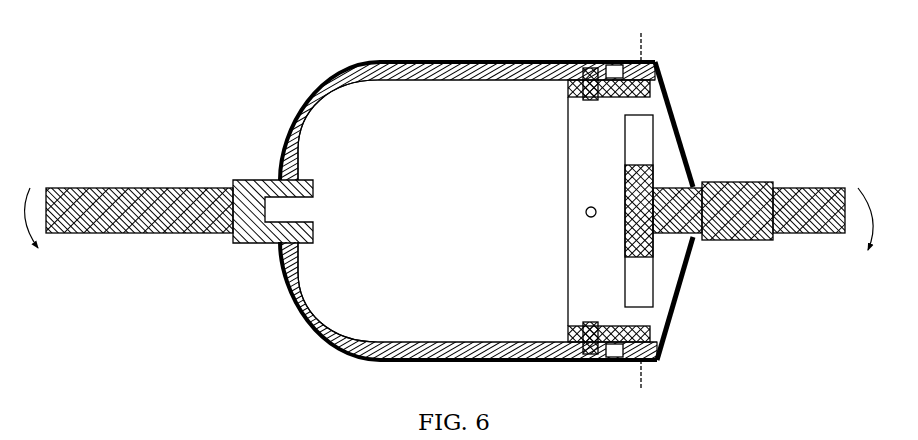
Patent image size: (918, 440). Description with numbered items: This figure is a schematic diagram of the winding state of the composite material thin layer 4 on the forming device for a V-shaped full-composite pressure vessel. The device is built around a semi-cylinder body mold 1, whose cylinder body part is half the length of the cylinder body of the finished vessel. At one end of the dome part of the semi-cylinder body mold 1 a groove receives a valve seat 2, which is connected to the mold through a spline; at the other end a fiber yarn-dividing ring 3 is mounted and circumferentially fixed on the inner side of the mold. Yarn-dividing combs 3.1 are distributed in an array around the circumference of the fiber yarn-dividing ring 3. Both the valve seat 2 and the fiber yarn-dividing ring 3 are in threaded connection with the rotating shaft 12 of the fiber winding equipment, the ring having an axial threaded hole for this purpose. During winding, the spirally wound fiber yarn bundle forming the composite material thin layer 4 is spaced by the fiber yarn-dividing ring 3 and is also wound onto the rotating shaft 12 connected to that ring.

The semi-cylinder body mold 1 is at (301, 298).
The valve seat 2 is at (246, 186).
The fiber yarn-dividing ring 3 is at (660, 356).
The yarn-dividing comb 3.1 is at (643, 56).
The composite material thin layer 4 is at (340, 347).
The rotating shaft 12 is at (143, 203).